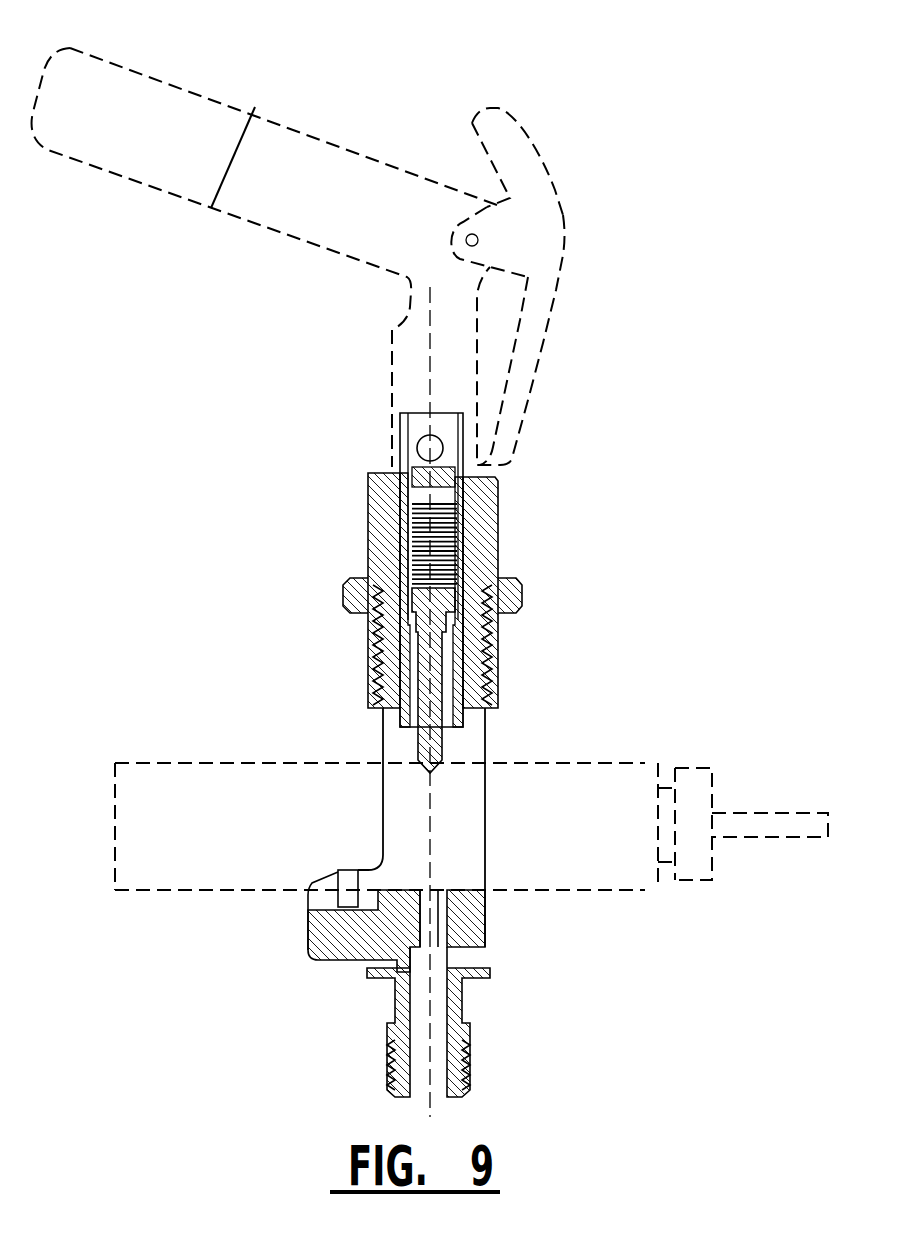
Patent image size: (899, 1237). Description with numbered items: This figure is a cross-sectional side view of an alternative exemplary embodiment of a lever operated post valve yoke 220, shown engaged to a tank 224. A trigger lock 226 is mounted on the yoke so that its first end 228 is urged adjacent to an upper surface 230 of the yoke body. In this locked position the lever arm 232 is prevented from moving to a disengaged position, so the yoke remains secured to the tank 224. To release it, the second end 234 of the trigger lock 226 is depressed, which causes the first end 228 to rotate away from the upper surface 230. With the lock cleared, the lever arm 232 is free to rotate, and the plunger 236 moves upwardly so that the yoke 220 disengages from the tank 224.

The lever operated post valve yoke 220 is at (600, 370).
The tank 224 is at (588, 762).
The trigger lock 226 is at (563, 223).
The first end 228 is at (513, 465).
The upper surface 230 is at (497, 480).
The lever arm 232 is at (330, 143).
The second end 234 is at (527, 148).
The plunger 236 is at (398, 453).